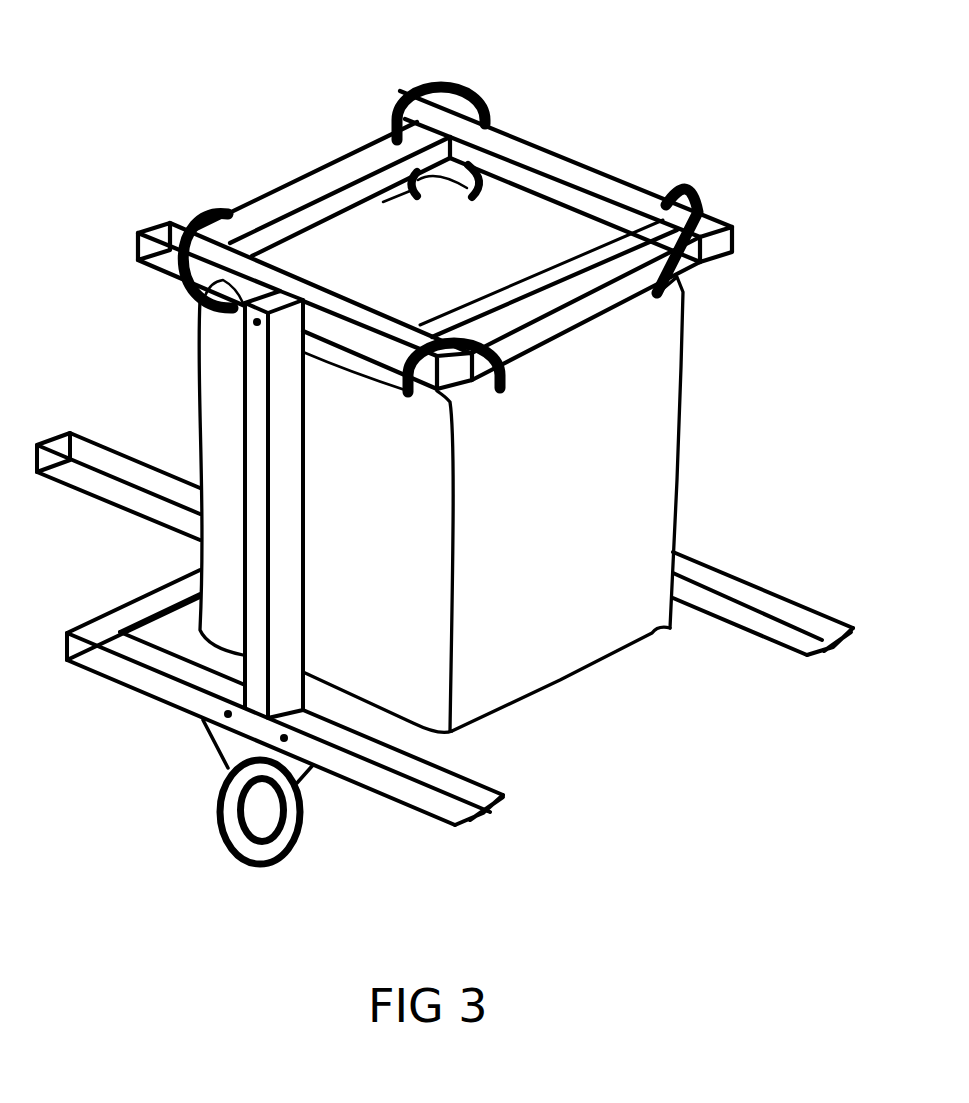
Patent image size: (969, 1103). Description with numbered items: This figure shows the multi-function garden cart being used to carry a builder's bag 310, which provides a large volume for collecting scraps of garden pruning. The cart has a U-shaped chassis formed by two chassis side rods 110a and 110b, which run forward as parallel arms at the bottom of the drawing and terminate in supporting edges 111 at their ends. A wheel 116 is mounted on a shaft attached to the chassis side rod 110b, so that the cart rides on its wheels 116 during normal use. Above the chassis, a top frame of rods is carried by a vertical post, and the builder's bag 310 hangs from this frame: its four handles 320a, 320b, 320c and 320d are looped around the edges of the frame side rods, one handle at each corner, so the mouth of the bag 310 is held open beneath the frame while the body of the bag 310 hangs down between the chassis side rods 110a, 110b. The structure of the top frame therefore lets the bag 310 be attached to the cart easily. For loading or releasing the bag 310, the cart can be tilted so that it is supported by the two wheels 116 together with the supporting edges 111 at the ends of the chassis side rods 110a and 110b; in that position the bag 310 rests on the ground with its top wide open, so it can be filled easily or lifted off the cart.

The chassis side rod 110a is at (757, 582).
The chassis side rod 110b is at (420, 800).
The supporting edges 111 is at (470, 820).
The cartwheels 116 is at (230, 842).
The builder's bag 310 is at (533, 633).
The builder's bag handle 320a is at (510, 386).
The builder's bag handle 320b is at (685, 268).
The builder's bag handle 320c is at (463, 76).
The builder's bag handle 320d is at (202, 213).